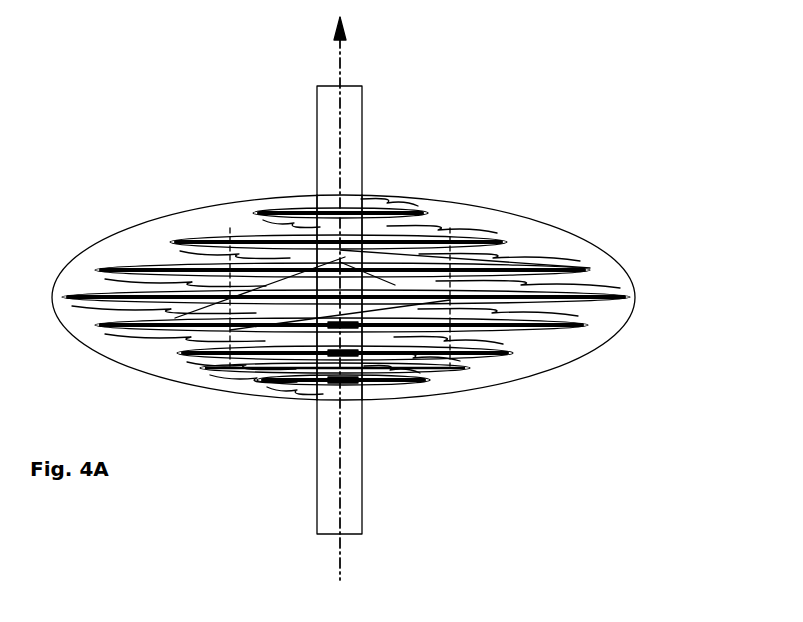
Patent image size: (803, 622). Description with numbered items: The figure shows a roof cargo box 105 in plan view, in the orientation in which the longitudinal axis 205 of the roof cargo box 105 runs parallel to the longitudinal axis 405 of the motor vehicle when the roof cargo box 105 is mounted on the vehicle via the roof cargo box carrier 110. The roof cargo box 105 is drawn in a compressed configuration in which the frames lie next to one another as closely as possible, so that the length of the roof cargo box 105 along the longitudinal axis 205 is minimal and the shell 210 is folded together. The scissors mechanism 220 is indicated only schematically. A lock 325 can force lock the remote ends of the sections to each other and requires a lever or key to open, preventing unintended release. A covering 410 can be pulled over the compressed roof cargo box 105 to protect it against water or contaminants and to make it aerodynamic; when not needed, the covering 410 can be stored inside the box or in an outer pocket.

The roof cargo box 105 is at (522, 185).
The roof cargo box carrier 110 is at (296, 119).
The longitudinal axis 205 is at (342, 47).
The longitudinal axis of the motor vehicle 405 is at (395, 299).
The shell 210 is at (396, 200).
The covering 410 is at (590, 244).
The scissors mechanism 220 is at (166, 330).
The lock 325 is at (352, 333).